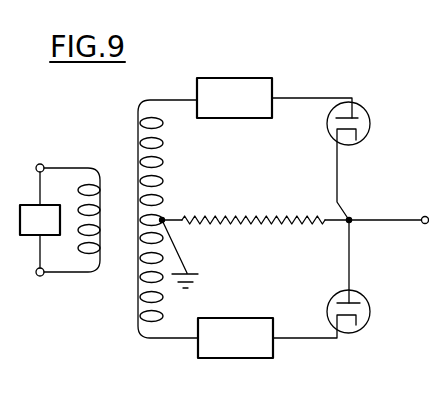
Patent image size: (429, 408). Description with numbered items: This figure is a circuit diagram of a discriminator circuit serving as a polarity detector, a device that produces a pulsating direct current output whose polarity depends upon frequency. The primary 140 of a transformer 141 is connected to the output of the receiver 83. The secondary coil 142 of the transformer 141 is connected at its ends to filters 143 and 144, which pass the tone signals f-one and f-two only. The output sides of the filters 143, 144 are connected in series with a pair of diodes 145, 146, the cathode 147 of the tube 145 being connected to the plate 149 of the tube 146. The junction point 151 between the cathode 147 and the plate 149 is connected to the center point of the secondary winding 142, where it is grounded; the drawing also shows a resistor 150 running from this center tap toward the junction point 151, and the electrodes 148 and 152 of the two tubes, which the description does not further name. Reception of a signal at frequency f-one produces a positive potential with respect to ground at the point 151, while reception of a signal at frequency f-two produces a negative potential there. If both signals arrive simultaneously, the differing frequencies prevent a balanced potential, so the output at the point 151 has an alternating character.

The receiver 83 is at (40, 222).
The primary 140 is at (86, 168).
The transformer 141 is at (120, 327).
The secondary coil 142 is at (138, 127).
The filter 143 is at (253, 78).
The filter 144 is at (257, 358).
The diode 145 is at (371, 144).
The diode 146 is at (344, 280).
The cathode 147 is at (362, 144).
The cathode of second diode 148 is at (363, 327).
The plate 149 is at (362, 297).
The load resistor 150 is at (233, 216).
The junction point 151 is at (351, 217).
The anode of first diode 152 is at (357, 104).